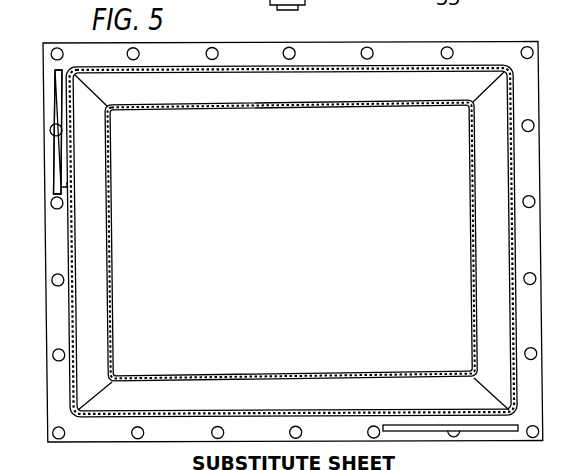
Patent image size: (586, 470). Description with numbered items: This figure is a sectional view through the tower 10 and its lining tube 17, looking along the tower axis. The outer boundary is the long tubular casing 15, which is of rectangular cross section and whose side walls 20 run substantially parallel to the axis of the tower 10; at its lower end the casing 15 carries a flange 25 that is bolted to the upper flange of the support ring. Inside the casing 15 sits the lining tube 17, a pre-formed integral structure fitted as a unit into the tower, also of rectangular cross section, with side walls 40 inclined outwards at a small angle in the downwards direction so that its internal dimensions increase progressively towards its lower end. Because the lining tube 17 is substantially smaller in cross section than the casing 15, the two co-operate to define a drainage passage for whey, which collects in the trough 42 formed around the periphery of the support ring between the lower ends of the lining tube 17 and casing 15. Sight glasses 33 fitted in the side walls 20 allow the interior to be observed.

The hollow tower 10 is at (291, 217).
The long tubular casing 15 is at (227, 66).
The lining tube 17 is at (313, 107).
The side walls 20 is at (257, 72).
The flange 25 is at (47, 163).
The sight glasses 33 is at (55, 108).
The side walls 40 is at (291, 240).
The trough 42 is at (494, 117).